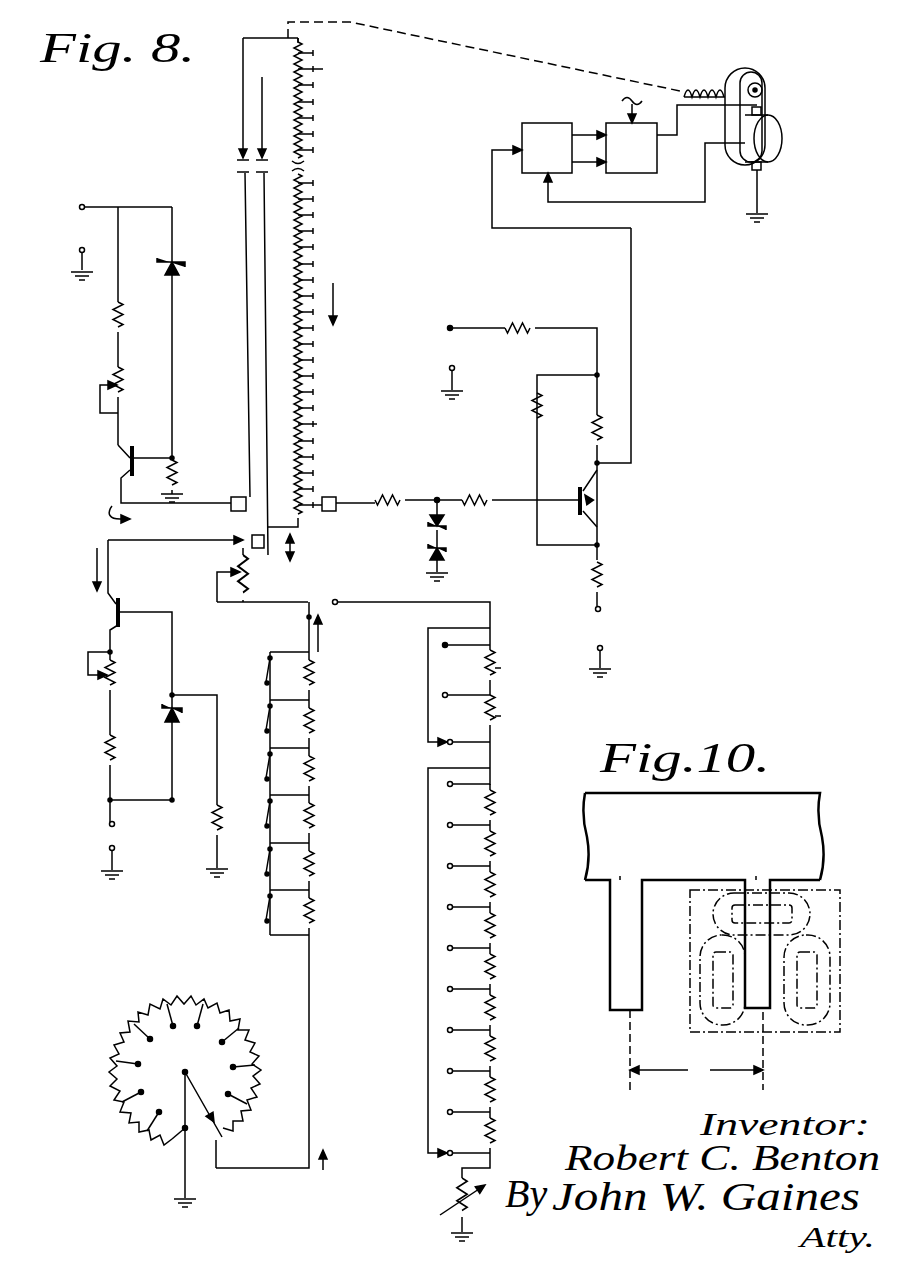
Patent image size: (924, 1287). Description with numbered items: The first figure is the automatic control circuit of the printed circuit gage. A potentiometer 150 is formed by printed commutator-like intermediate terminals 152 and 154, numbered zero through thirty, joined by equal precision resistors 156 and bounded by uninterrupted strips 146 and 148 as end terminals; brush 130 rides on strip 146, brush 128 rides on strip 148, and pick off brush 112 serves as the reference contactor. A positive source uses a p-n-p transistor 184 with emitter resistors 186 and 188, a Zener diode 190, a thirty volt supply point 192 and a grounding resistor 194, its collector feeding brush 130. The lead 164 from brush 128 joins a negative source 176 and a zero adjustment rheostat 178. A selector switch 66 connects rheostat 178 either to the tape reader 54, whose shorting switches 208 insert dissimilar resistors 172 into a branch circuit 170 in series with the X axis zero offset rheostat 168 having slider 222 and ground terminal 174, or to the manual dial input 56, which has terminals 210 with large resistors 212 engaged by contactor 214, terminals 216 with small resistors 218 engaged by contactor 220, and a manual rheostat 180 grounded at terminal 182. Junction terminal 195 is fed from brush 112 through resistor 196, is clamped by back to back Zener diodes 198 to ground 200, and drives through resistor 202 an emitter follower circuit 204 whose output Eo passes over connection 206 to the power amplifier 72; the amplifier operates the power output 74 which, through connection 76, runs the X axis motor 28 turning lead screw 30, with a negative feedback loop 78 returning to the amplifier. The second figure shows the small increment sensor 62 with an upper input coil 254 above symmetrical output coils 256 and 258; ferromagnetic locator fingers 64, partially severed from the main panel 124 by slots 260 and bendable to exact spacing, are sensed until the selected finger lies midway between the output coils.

In FIG. 8, the X axis motor 28 is at (782, 140).
In FIG. 8, the lead screw 30 is at (545, 70).
In FIG. 8, the tape reader 54 is at (262, 665).
In FIG. 8, the manual dial input 56 is at (416, 640).
In FIG. 10, the small increment sensor 62 is at (840, 904).
In FIG. 10, the locator finger 64 is at (620, 994).
In FIG. 8, the switch 66 is at (308, 613).
In FIG. 8, the power amplifier 72 is at (522, 130).
In FIG. 8, the power output 74 is at (657, 160).
In FIG. 8, the connection 76 is at (677, 128).
In FIG. 8, the first closed loop 78 is at (660, 203).
In FIG. 8, the pick off brush 112 is at (338, 511).
In FIG. 10, the main panel 124 is at (780, 798).
In FIG. 8, the brush 128 is at (250, 541).
In FIG. 8, the brush 130 is at (238, 497).
In FIG. 8, the uninterrupted strip 146 is at (244, 174).
In FIG. 8, the uninterrupted strip 148 is at (266, 84).
In FIG. 8, the potentiometer 150 is at (302, 49).
In FIG. 8, the intermediate terminals 152 is at (313, 215).
In FIG. 8, the intermediate terminals 154 is at (313, 424).
In FIG. 8, the precision resistors 156 is at (323, 69).
In FIG. 8, the lead 164 is at (240, 547).
In FIG. 8, the rotary rheostat 168 is at (110, 1106).
In FIG. 8, the branch circuit 170 is at (310, 1012).
In FIG. 8, the resistors 172 is at (316, 688).
In FIG. 8, the first terminal 174 is at (178, 1191).
In FIG. 8, the negative source 176 is at (104, 715).
In FIG. 8, the zero adjustment rheostat 178 is at (236, 572).
In FIG. 8, the manual rheostat 180 is at (457, 1183).
In FIG. 8, the terminal 182 is at (457, 1232).
In FIG. 8, the p-n-p transistor 184 is at (136, 448).
In FIG. 8, the emitter resistor 186 is at (115, 377).
In FIG. 8, the emitter resistor 188 is at (115, 310).
In FIG. 8, the Zener diode 190 is at (177, 273).
In FIG. 8, the DC supply point 192 is at (80, 210).
In FIG. 8, the resistor 194 is at (172, 476).
In FIG. 8, the three way junction terminal 195 is at (436, 496).
In FIG. 8, the resistor 196 is at (389, 496).
In FIG. 8, the back to back Zener diodes 198 is at (422, 562).
In FIG. 8, the ground 200 is at (450, 572).
In FIG. 8, the resistor 202 is at (496, 496).
In FIG. 8, the emitter follower transistor circuit 204 is at (611, 527).
In FIG. 8, the connection 206 is at (492, 193).
In FIG. 8, the shorting switches 208 is at (268, 776).
In FIG. 8, the terminals 210 is at (442, 695).
In FIG. 8, the resistors 212 is at (498, 670).
In FIG. 8, the sliding contactor 214 is at (441, 745).
In FIG. 8, the terminals 216 is at (447, 786).
In FIG. 8, the resistors 218 is at (498, 845).
In FIG. 8, the sliding contactor 220 is at (440, 1150).
In FIG. 8, the slider 222 is at (199, 1086).
In FIG. 10, the upper input coil 254 is at (790, 888).
In FIG. 10, the output coil 256 is at (702, 985).
In FIG. 10, the output coil 258 is at (830, 999).
In FIG. 10, the slots 260 is at (620, 878).